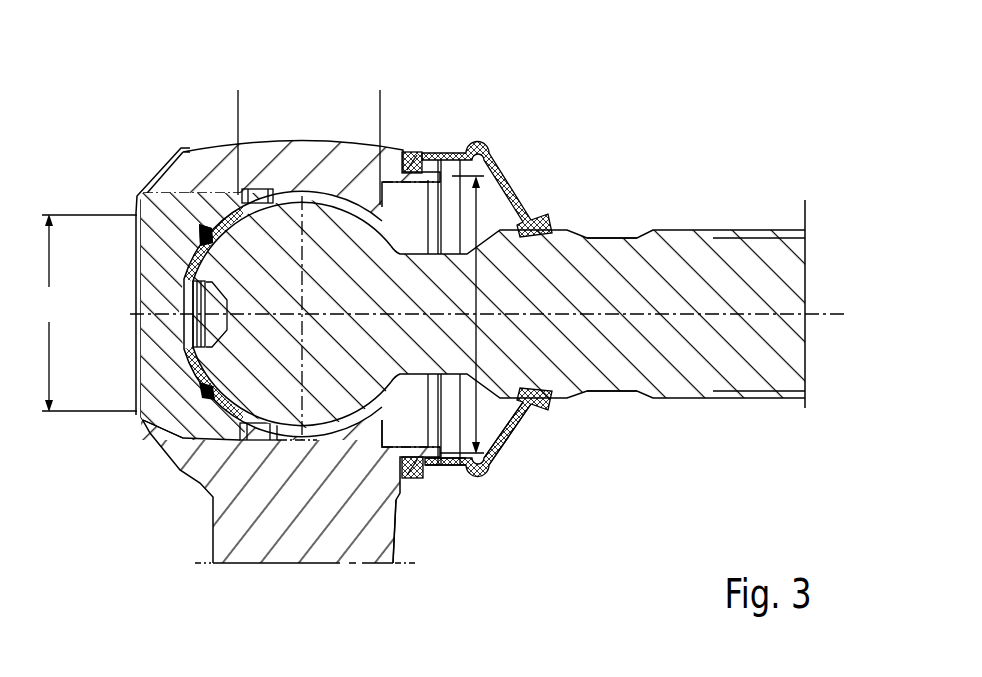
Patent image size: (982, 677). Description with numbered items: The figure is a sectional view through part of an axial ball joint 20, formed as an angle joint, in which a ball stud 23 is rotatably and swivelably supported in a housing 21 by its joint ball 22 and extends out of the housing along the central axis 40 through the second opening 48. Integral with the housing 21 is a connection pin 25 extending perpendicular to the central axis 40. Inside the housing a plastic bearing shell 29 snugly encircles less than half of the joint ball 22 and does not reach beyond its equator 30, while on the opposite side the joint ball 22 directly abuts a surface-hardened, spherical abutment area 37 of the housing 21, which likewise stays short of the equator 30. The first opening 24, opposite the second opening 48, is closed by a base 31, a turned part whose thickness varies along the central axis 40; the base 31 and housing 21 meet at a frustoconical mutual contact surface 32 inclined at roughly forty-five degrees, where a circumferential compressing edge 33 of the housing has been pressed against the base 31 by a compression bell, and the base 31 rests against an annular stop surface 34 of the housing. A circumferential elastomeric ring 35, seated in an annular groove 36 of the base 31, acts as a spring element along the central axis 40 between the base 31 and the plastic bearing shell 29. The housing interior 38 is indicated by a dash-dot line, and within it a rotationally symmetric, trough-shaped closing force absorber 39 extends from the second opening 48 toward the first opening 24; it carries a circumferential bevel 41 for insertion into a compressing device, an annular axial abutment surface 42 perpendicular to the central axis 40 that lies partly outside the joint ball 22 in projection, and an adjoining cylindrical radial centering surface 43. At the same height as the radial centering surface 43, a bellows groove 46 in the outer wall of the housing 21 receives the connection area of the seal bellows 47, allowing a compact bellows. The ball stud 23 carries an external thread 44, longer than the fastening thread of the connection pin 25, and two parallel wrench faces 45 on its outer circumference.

The axial ball joint 20 is at (619, 140).
The housing 21 is at (313, 138).
The joint ball 22 is at (202, 445).
The ball stud 23 is at (685, 227).
The first opening 24 is at (86, 313).
The connection pin 25 is at (394, 533).
The plastic bearing shell 29 is at (205, 356).
The equator 30 is at (384, 378).
The base 31 is at (165, 323).
The mutual contact surface 32 is at (152, 180).
The compressing edge 33 is at (163, 437).
The stop surface 34 is at (238, 116).
The elastomeric ring 35 is at (205, 232).
The annular groove 36 is at (197, 223).
The abutment area 37 is at (298, 437).
The housing interior 38 is at (440, 433).
The closing force absorber 39 is at (404, 228).
The central axis 40 is at (840, 312).
The circumferential bevel 41 is at (426, 202).
The axial abutment surface 42 is at (392, 121).
The radial centering surface 43 is at (408, 450).
The external thread 44 is at (758, 230).
The wrench faces 45 is at (607, 233).
The bellows groove 46 is at (413, 485).
The seal bellows 47 is at (510, 450).
The second opening 48 is at (478, 303).